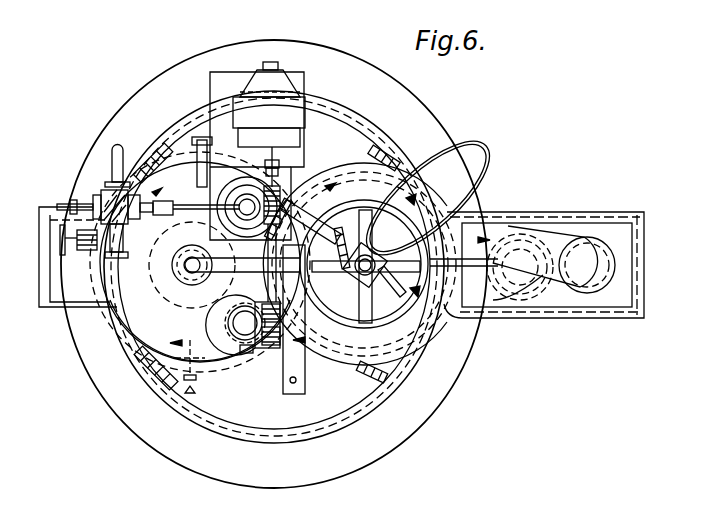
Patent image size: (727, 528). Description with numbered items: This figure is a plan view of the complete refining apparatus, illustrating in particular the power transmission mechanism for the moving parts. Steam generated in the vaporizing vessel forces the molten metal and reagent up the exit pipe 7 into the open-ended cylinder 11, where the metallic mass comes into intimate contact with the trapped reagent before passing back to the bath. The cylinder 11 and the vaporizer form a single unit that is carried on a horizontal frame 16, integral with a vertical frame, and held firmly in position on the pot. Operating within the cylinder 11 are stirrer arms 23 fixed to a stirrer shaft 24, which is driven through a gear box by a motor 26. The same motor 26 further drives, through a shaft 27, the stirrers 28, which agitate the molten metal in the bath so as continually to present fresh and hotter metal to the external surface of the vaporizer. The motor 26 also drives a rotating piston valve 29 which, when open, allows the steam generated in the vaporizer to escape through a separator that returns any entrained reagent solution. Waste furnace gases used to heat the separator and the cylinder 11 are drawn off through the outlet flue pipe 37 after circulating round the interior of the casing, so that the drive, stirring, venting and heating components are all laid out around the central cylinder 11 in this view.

The exit pipe 7 is at (190, 273).
The open-ended cylinder 11 is at (423, 342).
The horizontal frame 16 is at (553, 318).
The stirrer arms 23 is at (363, 307).
The stirrer shaft 24 is at (371, 259).
The motor 26 is at (257, 151).
The shaft 27 is at (270, 155).
The stirrers 28 is at (240, 208).
The rotating piston valve 29 is at (97, 250).
The outlet flue pipe 37 is at (527, 232).